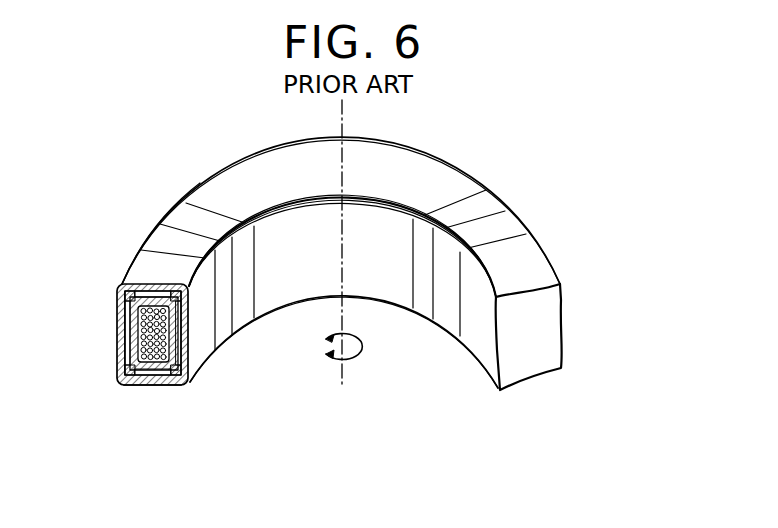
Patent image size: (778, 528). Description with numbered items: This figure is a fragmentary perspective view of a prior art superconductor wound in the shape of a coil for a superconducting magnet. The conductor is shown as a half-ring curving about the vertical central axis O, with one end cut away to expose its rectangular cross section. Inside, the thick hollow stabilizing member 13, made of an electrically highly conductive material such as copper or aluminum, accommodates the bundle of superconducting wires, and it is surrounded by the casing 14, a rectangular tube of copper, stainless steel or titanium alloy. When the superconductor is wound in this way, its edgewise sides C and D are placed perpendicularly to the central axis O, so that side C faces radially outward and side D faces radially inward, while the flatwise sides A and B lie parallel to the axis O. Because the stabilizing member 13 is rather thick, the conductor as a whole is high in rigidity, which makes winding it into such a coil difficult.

The stabilizing member 13 is at (131, 312).
The casing 14 is at (417, 167).
The flatwise side A is at (225, 320).
The flatwise side B is at (122, 331).
The edgewise side C is at (151, 264).
The edgewise side D is at (153, 388).
The central axis O is at (342, 387).